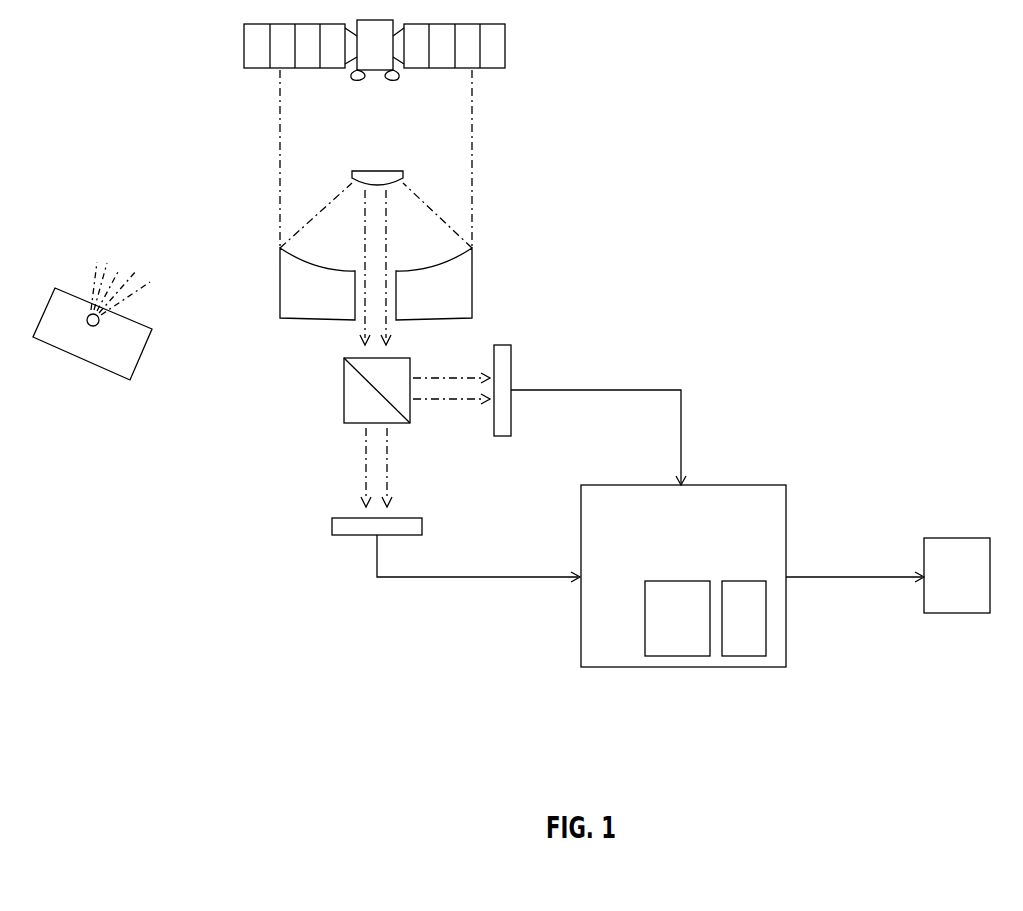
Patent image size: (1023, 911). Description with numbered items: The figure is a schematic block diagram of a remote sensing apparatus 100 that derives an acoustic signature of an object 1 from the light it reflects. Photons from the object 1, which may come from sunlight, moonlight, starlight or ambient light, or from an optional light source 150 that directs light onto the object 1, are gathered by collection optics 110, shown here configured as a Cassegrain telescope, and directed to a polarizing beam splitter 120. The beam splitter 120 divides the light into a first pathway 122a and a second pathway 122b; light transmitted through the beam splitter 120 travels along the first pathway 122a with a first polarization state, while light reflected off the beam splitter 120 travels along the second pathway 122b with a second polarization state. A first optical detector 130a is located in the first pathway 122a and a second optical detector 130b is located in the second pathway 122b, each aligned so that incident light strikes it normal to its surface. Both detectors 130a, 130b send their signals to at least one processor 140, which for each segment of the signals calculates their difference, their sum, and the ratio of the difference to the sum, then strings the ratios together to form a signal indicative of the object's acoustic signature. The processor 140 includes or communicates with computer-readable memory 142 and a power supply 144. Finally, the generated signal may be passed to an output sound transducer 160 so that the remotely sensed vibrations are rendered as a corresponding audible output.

The object 1 is at (505, 45).
The remote sensing apparatus 100 is at (850, 190).
The collection optics 110 is at (259, 219).
The polarizing beam splitter 120 is at (344, 392).
The first pathway 122a is at (378, 463).
The second pathway 122b is at (455, 372).
The first optical detector 130a is at (332, 527).
The second optical detector 130b is at (511, 357).
The processor 140 is at (721, 622).
The computer-readable memory 142 is at (680, 668).
The power supply 144 is at (745, 668).
The light source 150 is at (83, 358).
The output sound transducer 160 is at (957, 613).